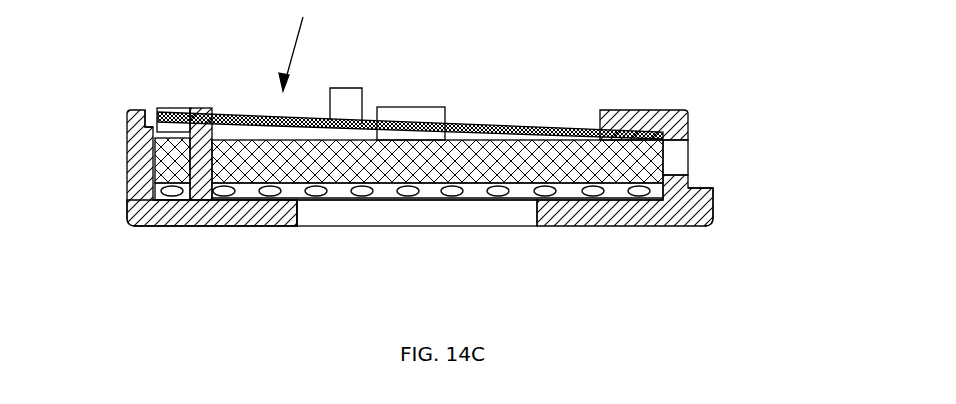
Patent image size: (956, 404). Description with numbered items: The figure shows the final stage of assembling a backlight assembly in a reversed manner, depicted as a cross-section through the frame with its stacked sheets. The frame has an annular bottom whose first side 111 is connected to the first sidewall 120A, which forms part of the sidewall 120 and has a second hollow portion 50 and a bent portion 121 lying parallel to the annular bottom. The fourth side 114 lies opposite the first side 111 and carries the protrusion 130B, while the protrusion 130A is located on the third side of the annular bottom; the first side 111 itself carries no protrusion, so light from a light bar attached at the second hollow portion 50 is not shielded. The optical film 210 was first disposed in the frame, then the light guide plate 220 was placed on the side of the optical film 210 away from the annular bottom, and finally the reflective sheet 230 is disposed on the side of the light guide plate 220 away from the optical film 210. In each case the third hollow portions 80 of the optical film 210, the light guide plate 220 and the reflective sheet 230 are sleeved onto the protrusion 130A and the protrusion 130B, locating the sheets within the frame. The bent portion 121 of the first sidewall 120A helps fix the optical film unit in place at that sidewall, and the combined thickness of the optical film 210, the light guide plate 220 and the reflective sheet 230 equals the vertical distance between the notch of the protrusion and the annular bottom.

The second hollow portion 50 is at (683, 151).
The third hollow portion 80 is at (203, 107).
The first side 111 is at (633, 220).
The fourth side 114 is at (200, 217).
The sidewall 120 is at (132, 162).
The first sidewall 120A is at (700, 178).
The bent portion 121 is at (653, 112).
The protrusion on the third side 130A is at (440, 108).
The protrusion on the fourth side 130B is at (152, 128).
The optical film 210 is at (130, 205).
The light guide plate 220 is at (148, 132).
The reflective sheet 230 is at (362, 100).